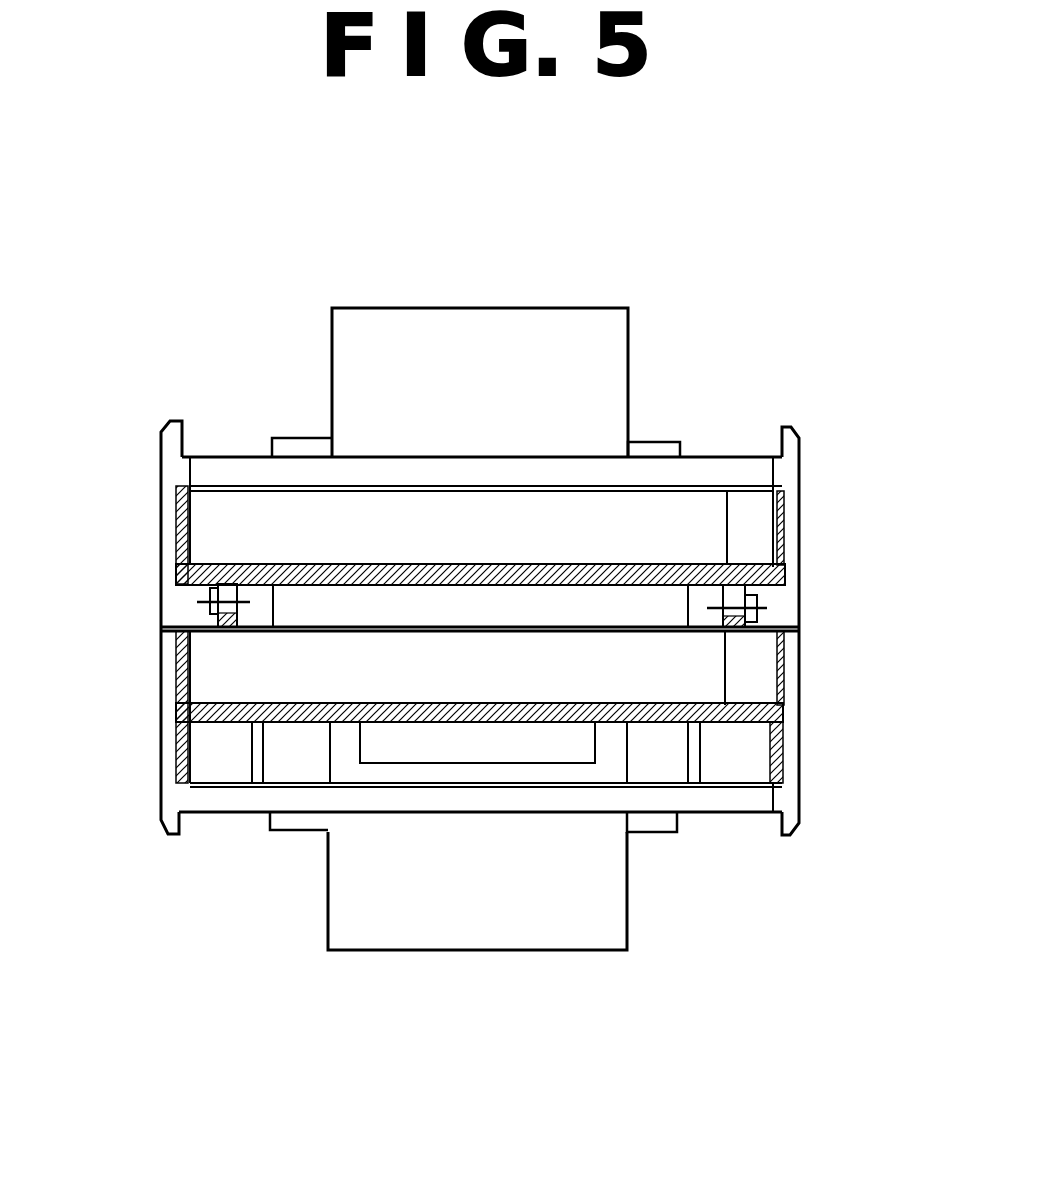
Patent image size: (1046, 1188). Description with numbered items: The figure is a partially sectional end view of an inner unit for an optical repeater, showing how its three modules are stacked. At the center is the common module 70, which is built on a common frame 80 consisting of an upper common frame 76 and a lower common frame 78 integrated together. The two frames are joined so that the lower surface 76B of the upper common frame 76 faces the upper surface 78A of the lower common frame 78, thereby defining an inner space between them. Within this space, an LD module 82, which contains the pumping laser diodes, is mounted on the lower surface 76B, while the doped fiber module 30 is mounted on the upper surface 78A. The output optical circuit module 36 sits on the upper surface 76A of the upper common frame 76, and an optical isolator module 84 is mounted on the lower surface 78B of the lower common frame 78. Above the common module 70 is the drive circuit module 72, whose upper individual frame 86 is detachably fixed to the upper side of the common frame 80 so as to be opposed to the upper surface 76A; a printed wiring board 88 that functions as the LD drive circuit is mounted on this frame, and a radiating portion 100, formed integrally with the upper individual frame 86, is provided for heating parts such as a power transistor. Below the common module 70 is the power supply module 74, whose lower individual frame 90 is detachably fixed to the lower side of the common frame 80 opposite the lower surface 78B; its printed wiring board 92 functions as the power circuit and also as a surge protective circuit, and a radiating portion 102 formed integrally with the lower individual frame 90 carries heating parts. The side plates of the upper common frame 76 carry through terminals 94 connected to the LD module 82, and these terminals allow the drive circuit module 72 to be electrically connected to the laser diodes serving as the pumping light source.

The doped fiber module 30 is at (250, 677).
The output optical circuit module 36 is at (712, 517).
The common module 70 is at (861, 533).
The drive circuit module 72 is at (543, 455).
The power supply module 74 is at (434, 797).
The upper common frame 76 is at (786, 580).
The upper surface 76A is at (507, 563).
The lower surface 76B is at (395, 584).
The lower common frame 78 is at (786, 704).
The upper surface 78A is at (499, 703).
The lower surface 78B is at (395, 722).
The common frame 80 is at (514, 560).
The LD module 82 is at (296, 597).
The optical isolator module 84 is at (423, 750).
The upper individual frame 86 is at (740, 458).
The printed wiring board 88 is at (658, 450).
The lower individual frame 90 is at (757, 817).
The printed wiring board 92 is at (653, 833).
The through terminals 94 is at (203, 602).
The radiating portion 100 is at (548, 328).
The radiating portion 102 is at (528, 940).